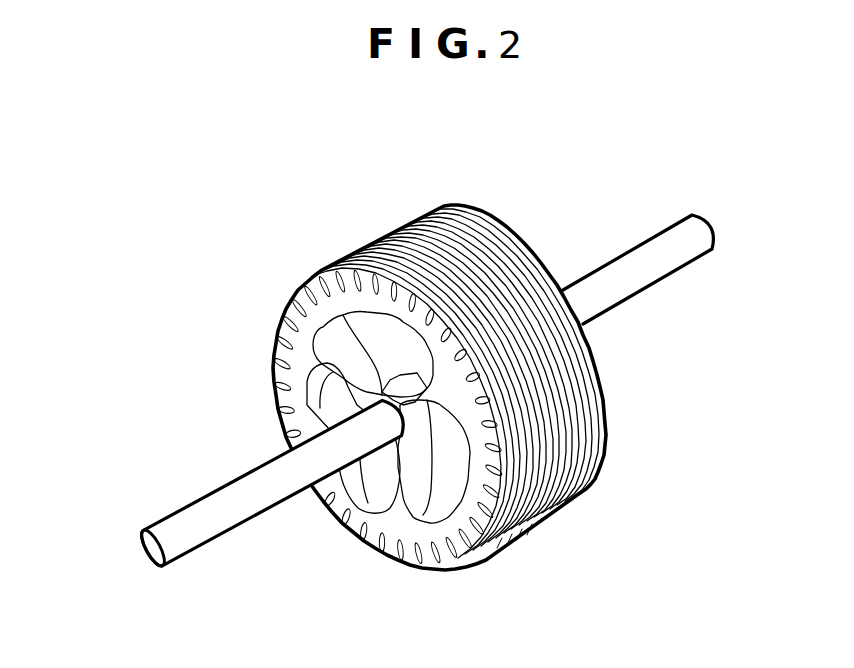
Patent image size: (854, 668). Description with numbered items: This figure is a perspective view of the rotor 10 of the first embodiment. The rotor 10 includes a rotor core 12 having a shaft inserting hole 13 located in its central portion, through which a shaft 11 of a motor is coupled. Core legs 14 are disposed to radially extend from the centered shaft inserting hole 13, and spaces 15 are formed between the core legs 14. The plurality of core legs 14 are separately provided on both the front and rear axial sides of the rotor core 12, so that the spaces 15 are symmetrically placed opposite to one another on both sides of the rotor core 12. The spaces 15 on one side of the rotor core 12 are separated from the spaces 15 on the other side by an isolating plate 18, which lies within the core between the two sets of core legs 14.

The rotor 10 is at (248, 279).
The shaft 11 is at (190, 518).
The rotor core 12 is at (560, 430).
The shaft inserting hole 13 is at (407, 297).
The core legs 14 is at (447, 340).
The spaces 15 is at (308, 275).
The isolating plate 18 is at (540, 517).